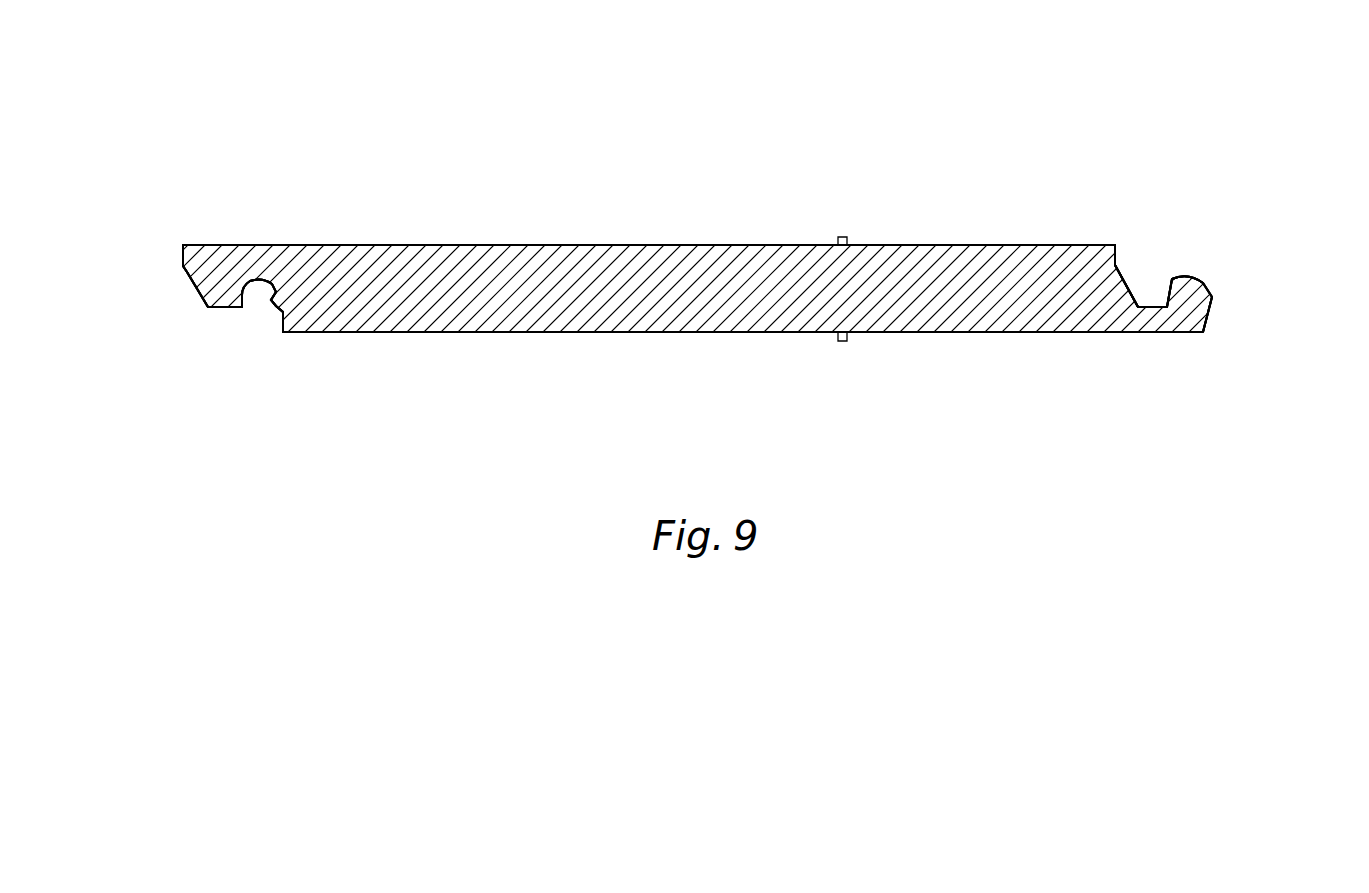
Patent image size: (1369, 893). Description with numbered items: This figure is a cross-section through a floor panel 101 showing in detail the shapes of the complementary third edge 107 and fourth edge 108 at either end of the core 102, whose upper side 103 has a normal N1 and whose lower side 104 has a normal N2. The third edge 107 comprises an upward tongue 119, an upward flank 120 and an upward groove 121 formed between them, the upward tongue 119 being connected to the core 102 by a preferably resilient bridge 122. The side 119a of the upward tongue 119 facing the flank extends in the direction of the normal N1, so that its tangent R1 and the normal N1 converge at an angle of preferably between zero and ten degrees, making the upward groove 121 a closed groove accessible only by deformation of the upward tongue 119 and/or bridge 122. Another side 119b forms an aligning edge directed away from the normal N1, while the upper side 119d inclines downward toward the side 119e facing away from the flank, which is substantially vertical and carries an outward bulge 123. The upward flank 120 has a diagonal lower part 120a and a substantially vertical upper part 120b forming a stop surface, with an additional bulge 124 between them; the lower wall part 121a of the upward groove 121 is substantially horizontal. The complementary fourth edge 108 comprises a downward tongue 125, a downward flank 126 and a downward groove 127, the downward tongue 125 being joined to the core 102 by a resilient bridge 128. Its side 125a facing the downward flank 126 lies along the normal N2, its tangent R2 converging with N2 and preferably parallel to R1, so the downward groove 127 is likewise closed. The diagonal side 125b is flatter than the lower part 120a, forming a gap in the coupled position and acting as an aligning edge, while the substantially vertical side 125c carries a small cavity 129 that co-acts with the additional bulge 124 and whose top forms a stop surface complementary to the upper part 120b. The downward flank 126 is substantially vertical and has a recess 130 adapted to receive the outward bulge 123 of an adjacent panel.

The floor panel 101 is at (428, 164).
The core 102 is at (515, 277).
The upper side 103 is at (637, 243).
The lower side 104 is at (633, 335).
The third edge 107 is at (1234, 169).
The fourth edge 108 is at (144, 189).
The upward tongue 119 is at (1208, 322).
The side of upward tongue facing toward upward flank 119a is at (1171, 318).
The side of upward tongue forming aligning edge 119b is at (1183, 277).
The upper side of upward tongue 119d is at (1202, 282).
The side of upward tongue facing away from upward flank 119e is at (1213, 296).
The upward flank 120 is at (1125, 257).
The lower part of upward flank 120a is at (1125, 306).
The upper part of upward flank 120b is at (1113, 256).
The upward groove 121 is at (1173, 277).
The lower wall part of upward groove 121a is at (1140, 309).
The bridge 122 is at (1161, 308).
The outward bulge 123 is at (1215, 302).
The additional bulge 124 is at (1113, 260).
The downward tongue 125 is at (210, 245).
The side of downward tongue facing toward downward flank 125a is at (243, 306).
The side of downward tongue facing away from downward flank 125b is at (195, 292).
The side facing away from downward flank 125c is at (187, 272).
The downward flank 126 is at (280, 318).
The downward groove 127 is at (293, 245).
The bridge 128 is at (270, 245).
The small cavity 129 is at (184, 264).
The recess 130 is at (277, 302).
The tangent R1 is at (1150, 278).
The tangent R2 is at (240, 280).
The normal of the upper side N1 is at (838, 245).
The normal of the lower side N2 is at (838, 332).